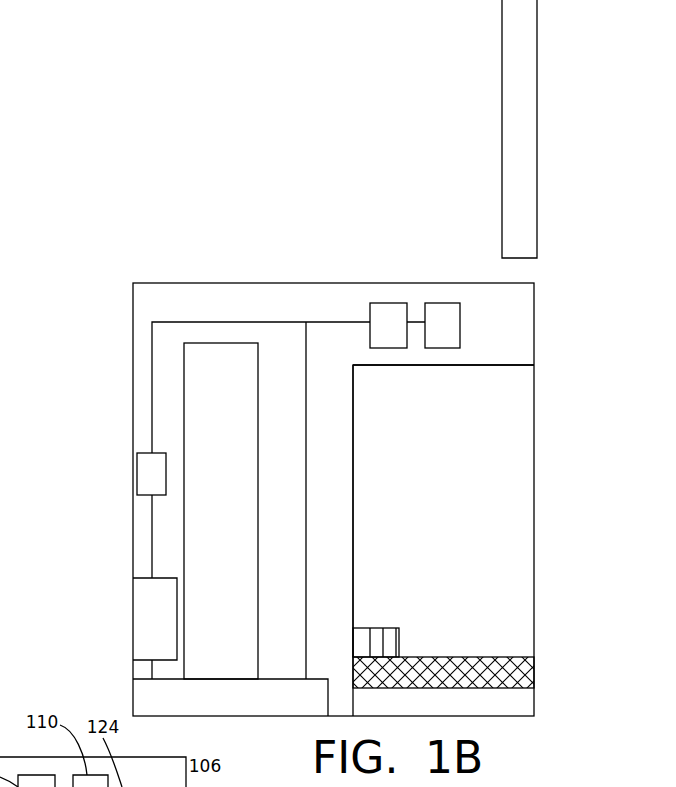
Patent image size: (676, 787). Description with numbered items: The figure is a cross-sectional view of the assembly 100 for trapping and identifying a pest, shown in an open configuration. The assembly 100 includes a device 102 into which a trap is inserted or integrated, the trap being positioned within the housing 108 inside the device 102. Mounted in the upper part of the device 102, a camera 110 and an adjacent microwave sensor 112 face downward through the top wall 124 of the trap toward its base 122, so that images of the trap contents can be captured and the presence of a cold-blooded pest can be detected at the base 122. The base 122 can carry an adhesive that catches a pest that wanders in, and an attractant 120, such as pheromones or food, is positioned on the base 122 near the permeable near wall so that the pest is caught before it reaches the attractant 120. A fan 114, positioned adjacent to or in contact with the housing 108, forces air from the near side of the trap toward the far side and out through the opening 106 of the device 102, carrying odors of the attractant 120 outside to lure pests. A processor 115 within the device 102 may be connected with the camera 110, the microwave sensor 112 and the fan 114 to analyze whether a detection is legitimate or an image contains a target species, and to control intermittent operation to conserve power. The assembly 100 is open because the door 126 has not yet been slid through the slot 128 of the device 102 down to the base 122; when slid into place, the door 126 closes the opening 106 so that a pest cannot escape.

The assembly 100 is at (78, 321).
The device 102 is at (122, 429).
The opening 106 is at (513, 368).
The housing 108 is at (352, 405).
The camera 110 is at (437, 303).
The microwave sensor 112 is at (370, 312).
The fan 114 is at (184, 505).
The processor 115 is at (137, 472).
The attractant 120 is at (398, 627).
The base 122 is at (508, 657).
The top wall 124 is at (472, 365).
The door 126 is at (502, 128).
The slot 128 is at (513, 283).